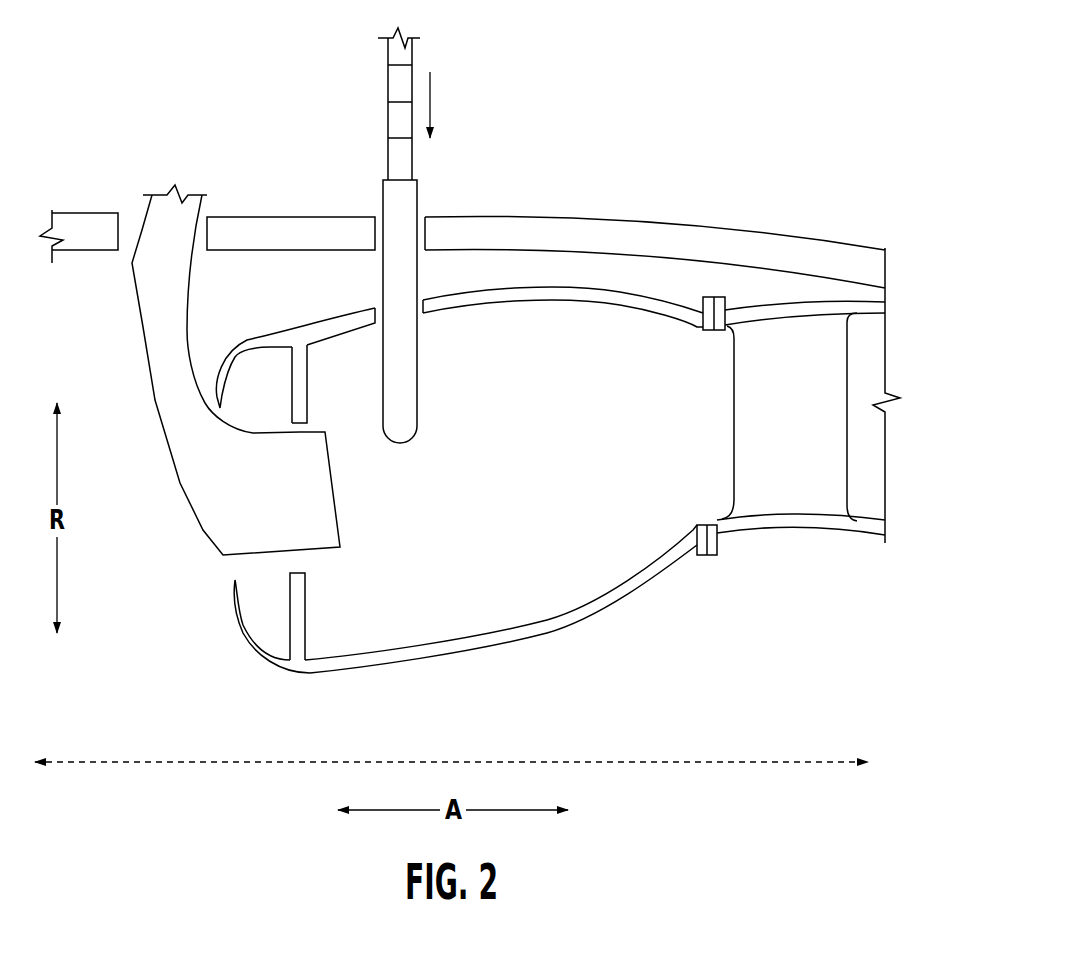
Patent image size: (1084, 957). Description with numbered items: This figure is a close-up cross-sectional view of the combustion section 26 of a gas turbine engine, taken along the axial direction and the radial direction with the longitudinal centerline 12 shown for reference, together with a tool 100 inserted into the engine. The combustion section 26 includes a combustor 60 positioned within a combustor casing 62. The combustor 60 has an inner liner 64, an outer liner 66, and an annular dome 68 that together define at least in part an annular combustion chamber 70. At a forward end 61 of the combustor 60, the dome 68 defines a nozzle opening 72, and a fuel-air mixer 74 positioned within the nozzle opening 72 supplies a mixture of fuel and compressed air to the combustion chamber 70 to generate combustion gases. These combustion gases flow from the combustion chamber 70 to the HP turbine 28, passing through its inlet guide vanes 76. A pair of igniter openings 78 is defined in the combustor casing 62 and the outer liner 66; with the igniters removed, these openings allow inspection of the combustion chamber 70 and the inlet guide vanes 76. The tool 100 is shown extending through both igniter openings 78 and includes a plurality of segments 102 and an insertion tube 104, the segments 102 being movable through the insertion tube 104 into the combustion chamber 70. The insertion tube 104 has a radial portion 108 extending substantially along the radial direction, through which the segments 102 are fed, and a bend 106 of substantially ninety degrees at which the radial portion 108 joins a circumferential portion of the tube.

The longitudinal centerline 12 is at (717, 762).
The combustion section 26 is at (723, 84).
The HP turbine 28 is at (816, 290).
The combustor 60 is at (631, 260).
The forward end 61 is at (292, 700).
The combustor casing 62 is at (588, 220).
The inner liner 64 is at (580, 622).
The outer liner 66 is at (528, 295).
The dome 68 is at (264, 612).
The combustion chamber 70 is at (577, 463).
The nozzle opening 72 is at (343, 560).
The fuel-air mixer 74 is at (197, 477).
The inlet guide vanes 76 is at (820, 373).
The igniter openings 78 is at (376, 210).
The tool 100 is at (441, 178).
The segments 102 is at (400, 87).
The insertion tube 104 is at (453, 390).
The bend 106 is at (392, 461).
The radial portion 108 is at (403, 292).